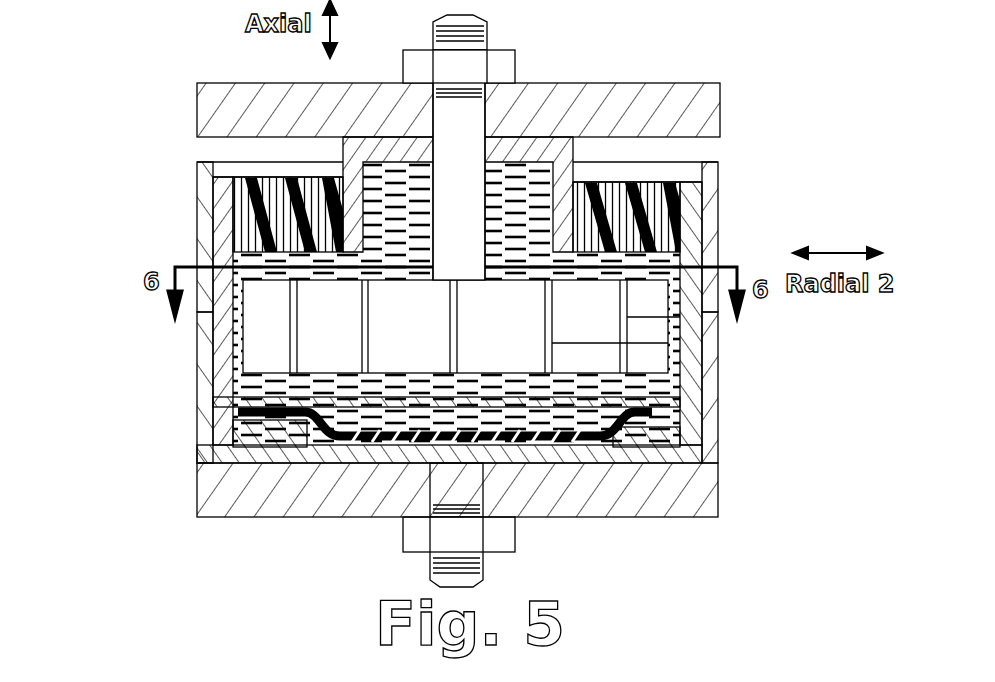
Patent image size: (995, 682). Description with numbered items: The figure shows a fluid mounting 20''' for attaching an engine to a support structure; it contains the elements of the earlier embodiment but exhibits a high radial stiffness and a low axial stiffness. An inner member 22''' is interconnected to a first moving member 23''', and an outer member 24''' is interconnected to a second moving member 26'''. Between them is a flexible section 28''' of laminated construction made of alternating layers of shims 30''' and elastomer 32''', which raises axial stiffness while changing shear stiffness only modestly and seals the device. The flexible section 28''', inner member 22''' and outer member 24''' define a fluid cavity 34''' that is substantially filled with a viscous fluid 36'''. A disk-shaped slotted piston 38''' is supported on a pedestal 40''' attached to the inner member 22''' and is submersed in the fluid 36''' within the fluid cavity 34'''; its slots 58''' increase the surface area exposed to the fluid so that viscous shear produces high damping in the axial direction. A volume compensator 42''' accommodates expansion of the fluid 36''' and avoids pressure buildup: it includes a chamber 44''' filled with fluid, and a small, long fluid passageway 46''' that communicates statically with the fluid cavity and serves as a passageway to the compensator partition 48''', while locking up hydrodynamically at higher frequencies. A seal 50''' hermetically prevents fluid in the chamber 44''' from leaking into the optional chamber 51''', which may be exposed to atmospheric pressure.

The fluid mounting 20''' is at (637, 301).
The inner member 22''' is at (594, 194).
The first moving member 23''' is at (458, 94).
The outer member 24''' is at (519, 237).
The second moving member 26''' is at (513, 490).
The flexible section 28''' is at (141, 187).
The shims 30''' is at (196, 181).
The elastomer 32''' is at (377, 156).
The fluid cavity 34''' is at (524, 387).
The fluid 36''' is at (386, 393).
The slotted piston 38''' is at (455, 326).
The pedestal 40''' is at (458, 207).
The volume compensator 42''' is at (445, 495).
The chamber 44''' is at (456, 425).
The fluid passageway 46''' is at (456, 329).
The compensator partition 48''' is at (589, 501).
The seal 50''' is at (375, 434).
The chamber 51''' is at (398, 470).
The slots 58''' is at (543, 311).